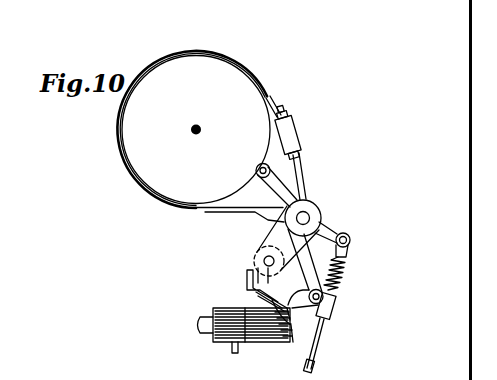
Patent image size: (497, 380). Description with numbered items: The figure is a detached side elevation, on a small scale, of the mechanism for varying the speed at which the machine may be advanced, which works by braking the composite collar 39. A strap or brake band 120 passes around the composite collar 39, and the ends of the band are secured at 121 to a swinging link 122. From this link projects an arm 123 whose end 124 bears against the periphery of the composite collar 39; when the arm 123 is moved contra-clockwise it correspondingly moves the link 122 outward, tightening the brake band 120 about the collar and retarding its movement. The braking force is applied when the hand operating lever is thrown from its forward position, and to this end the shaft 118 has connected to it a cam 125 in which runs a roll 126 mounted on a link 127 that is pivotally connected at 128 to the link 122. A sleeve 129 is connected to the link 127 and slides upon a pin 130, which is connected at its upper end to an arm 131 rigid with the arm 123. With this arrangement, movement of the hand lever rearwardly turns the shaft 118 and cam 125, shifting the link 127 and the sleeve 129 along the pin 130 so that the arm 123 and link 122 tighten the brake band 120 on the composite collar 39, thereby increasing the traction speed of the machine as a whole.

The composite collar 39 is at (234, 72).
The brake band 120 is at (264, 91).
The arm 123 is at (301, 167).
The end of arm 124 is at (258, 167).
The securing point 121 is at (307, 211).
The swinging link 122 is at (291, 267).
The arm 131 is at (336, 237).
The link 127 is at (337, 268).
The pivot 128 is at (262, 257).
The cam 125 is at (247, 291).
The shaft 118 is at (205, 318).
The roll 126 is at (281, 344).
The sleeve 129 is at (334, 304).
The pin 130 is at (322, 337).